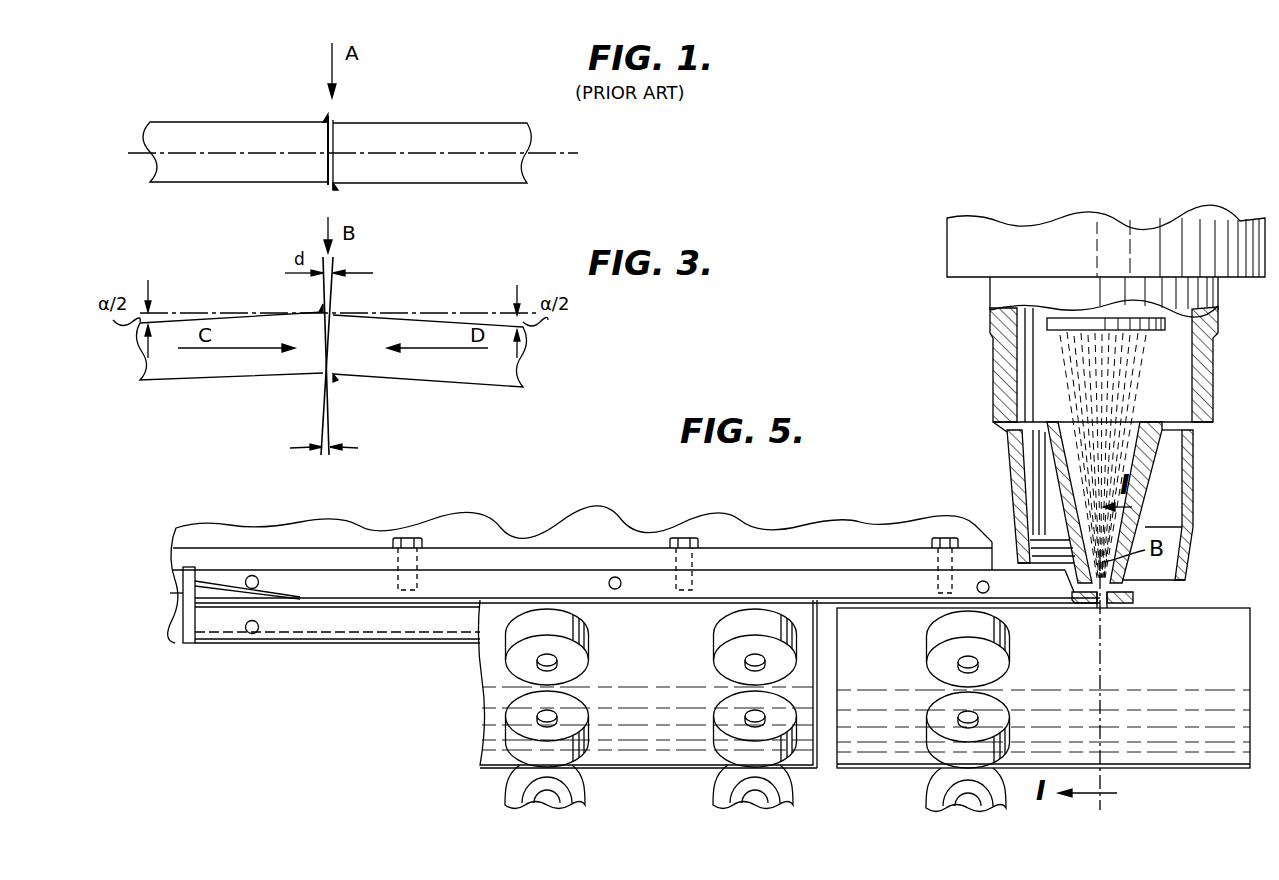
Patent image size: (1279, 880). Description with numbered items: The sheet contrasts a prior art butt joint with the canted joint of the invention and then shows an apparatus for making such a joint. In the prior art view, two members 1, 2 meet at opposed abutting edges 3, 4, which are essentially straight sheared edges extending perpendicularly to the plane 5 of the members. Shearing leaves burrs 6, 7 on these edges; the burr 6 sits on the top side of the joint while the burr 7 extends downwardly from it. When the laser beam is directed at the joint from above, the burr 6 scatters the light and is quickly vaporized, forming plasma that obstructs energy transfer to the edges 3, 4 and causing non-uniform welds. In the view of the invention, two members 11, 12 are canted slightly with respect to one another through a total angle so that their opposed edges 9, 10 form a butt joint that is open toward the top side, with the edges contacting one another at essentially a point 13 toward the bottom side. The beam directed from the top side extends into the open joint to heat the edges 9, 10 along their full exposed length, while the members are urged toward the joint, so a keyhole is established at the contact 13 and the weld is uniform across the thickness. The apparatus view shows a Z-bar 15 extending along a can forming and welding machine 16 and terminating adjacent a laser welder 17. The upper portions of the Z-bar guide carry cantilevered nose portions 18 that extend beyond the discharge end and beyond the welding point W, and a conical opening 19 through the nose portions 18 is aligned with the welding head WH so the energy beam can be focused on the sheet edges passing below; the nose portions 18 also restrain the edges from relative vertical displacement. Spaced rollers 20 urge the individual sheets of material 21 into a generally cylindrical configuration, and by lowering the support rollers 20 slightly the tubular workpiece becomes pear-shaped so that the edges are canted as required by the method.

In FIG. 1, the member 1 is at (162, 128).
In FIG. 1, the member 2 is at (475, 130).
In FIG. 1, the edge 3 is at (327, 146).
In FIG. 1, the edge 4 is at (334, 137).
In FIG. 1, the plane 5 is at (536, 155).
In FIG. 1, the burr 6 is at (328, 114).
In FIG. 1, the burr 7 is at (335, 186).
In FIG. 3, the edge 9 is at (335, 320).
In FIG. 3, the edge 10 is at (322, 338).
In FIG. 3, the member 11 is at (448, 332).
In FIG. 3, the member 12 is at (227, 328).
In FIG. 3, the contact point 13 is at (334, 377).
In FIG. 5, the Z-bar 15 is at (383, 646).
In FIG. 5, the can forming and welding machine 16 is at (275, 526).
In FIG. 5, the laser welder 17 is at (1000, 392).
In FIG. 5, the cantilevered nose portions 18 is at (1133, 592).
In FIG. 5, the conical opening 19 is at (1094, 610).
In FIG. 5, the rollers 20 is at (573, 668).
In FIG. 5, the sheets of material 21 is at (668, 753).
In FIG. 5, the welding point W is at (1108, 611).
In FIG. 5, the welding head WH is at (1050, 478).